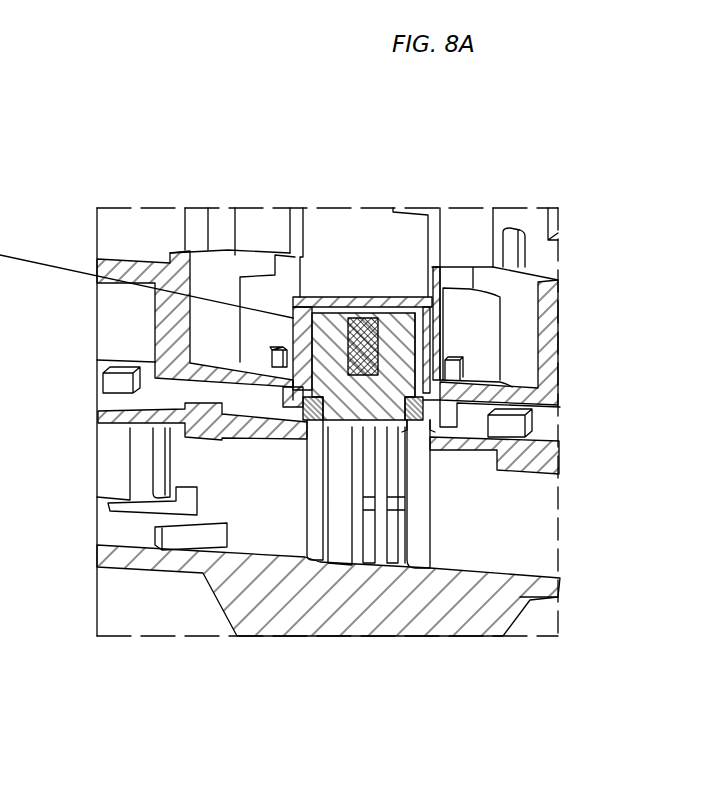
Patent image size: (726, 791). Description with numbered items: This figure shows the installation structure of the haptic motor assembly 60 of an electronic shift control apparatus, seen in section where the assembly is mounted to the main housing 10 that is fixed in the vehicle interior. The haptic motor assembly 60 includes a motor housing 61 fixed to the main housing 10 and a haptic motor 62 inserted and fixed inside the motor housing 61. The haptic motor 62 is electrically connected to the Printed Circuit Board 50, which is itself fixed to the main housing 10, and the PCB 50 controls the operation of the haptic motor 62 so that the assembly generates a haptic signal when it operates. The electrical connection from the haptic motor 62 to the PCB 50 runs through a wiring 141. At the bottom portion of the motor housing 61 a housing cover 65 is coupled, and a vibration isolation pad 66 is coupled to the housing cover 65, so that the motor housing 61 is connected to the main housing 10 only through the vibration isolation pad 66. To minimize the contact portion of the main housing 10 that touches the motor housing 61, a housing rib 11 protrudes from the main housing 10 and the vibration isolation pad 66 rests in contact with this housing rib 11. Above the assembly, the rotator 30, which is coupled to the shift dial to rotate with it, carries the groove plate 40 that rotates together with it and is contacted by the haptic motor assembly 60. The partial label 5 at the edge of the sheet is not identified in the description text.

The main housing 10 is at (157, 326).
The housing rib 11 is at (312, 509).
The wiring 141 is at (382, 518).
The Printed Circuit Board 50 is at (202, 428).
The haptic motor assembly 60 is at (428, 346).
The motor housing 61 is at (400, 338).
The haptic motor 62 is at (365, 340).
The housing cover 65 is at (287, 411).
The vibration isolation pad 66 is at (303, 445).
The rotator 30 is at (13, 44).
The groove plate 40 is at (0, 127).
The assembly 5 is at (4, 182).